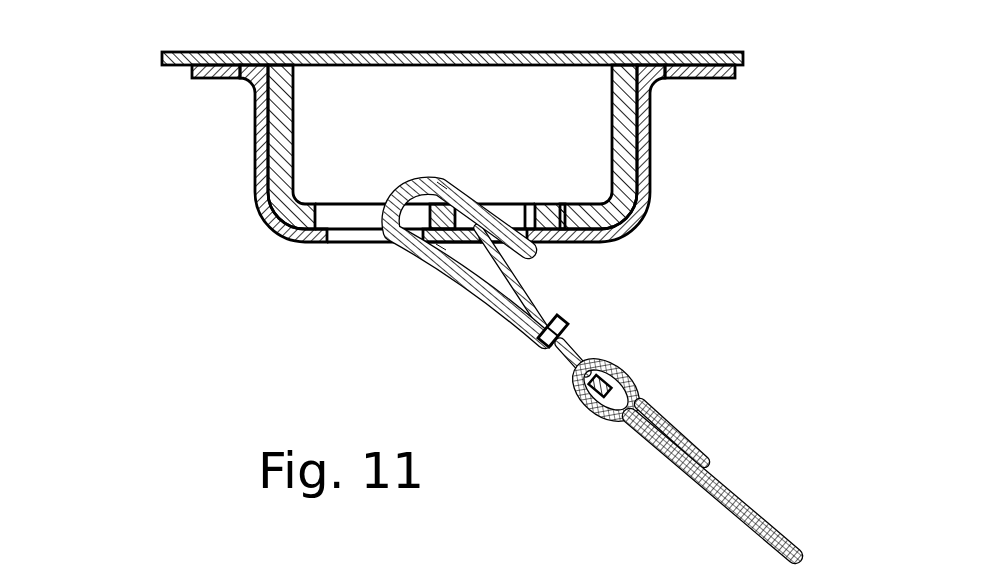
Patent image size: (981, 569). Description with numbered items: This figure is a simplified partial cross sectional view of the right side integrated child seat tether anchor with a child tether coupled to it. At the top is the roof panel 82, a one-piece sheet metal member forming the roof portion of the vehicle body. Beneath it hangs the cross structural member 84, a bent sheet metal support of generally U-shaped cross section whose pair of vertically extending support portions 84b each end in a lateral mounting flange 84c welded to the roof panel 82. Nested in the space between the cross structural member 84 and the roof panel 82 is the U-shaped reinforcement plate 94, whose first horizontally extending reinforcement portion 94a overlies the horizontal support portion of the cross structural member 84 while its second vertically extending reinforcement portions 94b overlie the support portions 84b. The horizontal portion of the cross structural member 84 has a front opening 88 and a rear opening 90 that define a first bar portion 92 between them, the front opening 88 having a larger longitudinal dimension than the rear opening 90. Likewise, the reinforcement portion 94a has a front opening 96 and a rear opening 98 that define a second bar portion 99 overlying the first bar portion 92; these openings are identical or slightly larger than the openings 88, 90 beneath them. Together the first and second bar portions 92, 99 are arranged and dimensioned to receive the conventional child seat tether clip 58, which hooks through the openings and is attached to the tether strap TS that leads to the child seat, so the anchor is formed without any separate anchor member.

The roof panel 82 is at (677, 50).
The cross structural member 84 is at (464, 206).
The vertically extending support portion 84b is at (253, 165).
The lateral mounting flange 84c is at (207, 80).
The reinforcement plate 94 is at (505, 150).
The first horizontally extending reinforcement portion 94a is at (572, 205).
The second vertically extending reinforcement portion 94b is at (293, 117).
The front opening 96 is at (523, 203).
The rear opening 98 is at (333, 215).
The second bar portion 99 is at (445, 195).
The front opening 88 is at (524, 205).
The rear opening 90 is at (338, 243).
The first bar portion 92 is at (440, 245).
The child seat tether clip 58 is at (548, 296).
The tether strap TS is at (660, 502).